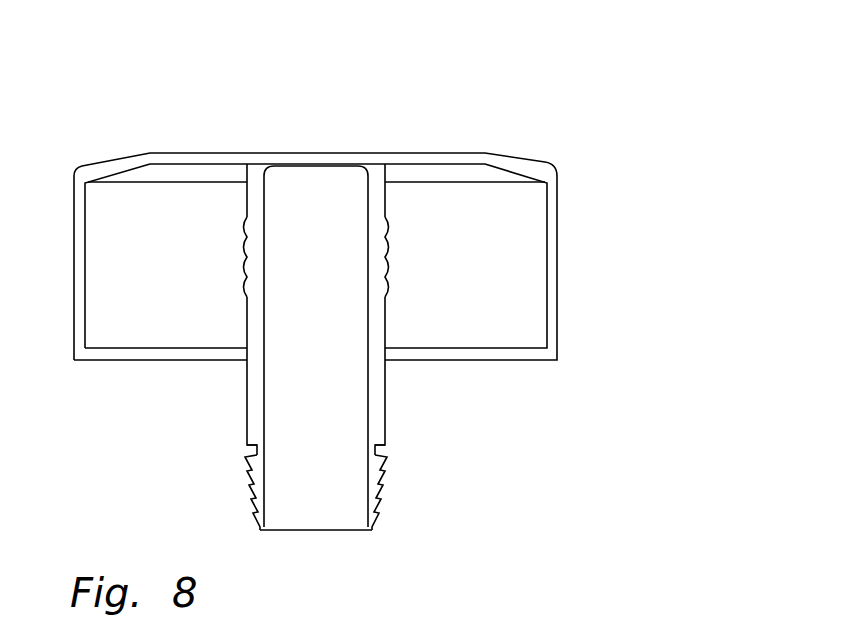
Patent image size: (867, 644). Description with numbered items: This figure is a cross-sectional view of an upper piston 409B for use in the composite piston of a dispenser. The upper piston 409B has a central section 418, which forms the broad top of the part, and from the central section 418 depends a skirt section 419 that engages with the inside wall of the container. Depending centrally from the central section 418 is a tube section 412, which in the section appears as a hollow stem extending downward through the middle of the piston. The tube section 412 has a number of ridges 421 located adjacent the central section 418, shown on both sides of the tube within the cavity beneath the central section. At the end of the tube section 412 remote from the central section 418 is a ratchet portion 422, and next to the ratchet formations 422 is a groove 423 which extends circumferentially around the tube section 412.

The cap assembly 409B is at (408, 299).
The central section 418 is at (439, 154).
The skirt section 419 is at (550, 314).
The tube section 412 is at (258, 328).
The ridges 421 is at (243, 267).
The groove 423 is at (380, 449).
The ratchet portion 422 is at (378, 503).